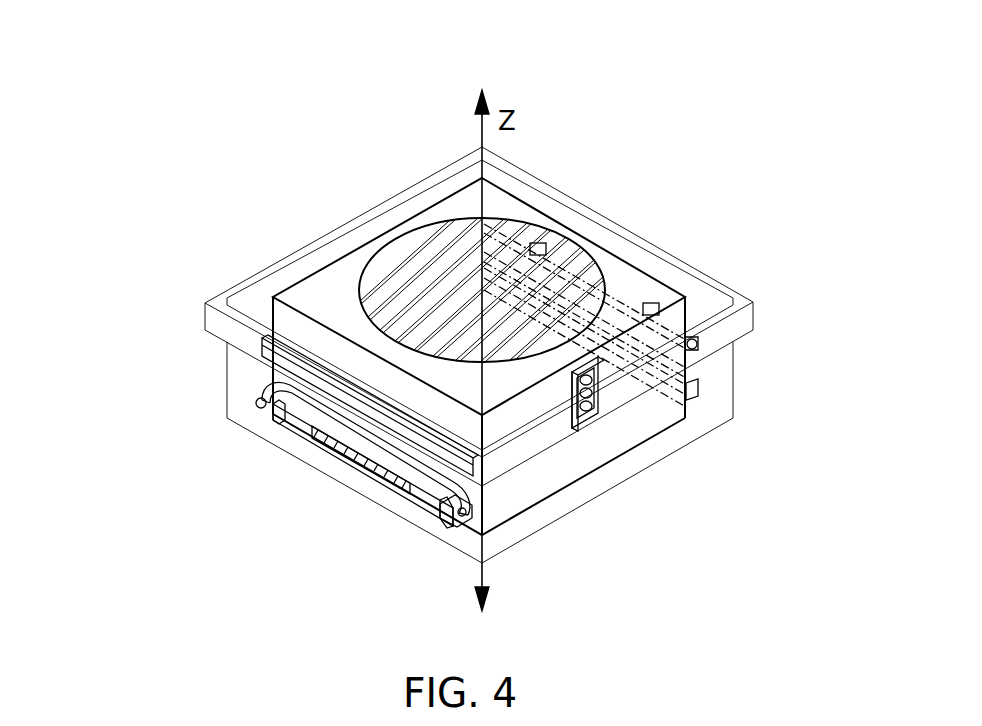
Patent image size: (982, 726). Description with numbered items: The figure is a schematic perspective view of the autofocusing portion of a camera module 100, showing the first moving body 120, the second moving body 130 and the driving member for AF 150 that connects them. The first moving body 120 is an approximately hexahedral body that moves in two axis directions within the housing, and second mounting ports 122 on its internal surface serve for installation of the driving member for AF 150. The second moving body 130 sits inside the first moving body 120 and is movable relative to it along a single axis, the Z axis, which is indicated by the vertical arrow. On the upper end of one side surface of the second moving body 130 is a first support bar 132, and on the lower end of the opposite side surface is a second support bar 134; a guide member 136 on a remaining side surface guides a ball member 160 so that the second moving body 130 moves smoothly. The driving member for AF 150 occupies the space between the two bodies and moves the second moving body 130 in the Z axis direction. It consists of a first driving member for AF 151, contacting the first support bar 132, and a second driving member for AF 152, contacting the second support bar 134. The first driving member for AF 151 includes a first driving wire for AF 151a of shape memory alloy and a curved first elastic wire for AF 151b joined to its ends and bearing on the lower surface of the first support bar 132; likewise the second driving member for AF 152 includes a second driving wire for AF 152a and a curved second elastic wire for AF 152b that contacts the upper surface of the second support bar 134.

The camera module 100 is at (504, 51).
The first moving body 120 is at (207, 315).
The second mounting ports 122 is at (423, 497).
The second moving body 130 is at (316, 285).
The first support bar 132 is at (447, 522).
The second support bar 134 is at (700, 384).
The guide member 136 is at (573, 430).
The driving member for AF 150 is at (718, 20).
The first driving member for AF 151 is at (140, 463).
The first driving wire for AF 151a is at (277, 437).
The first elastic wire for AF 151b is at (263, 380).
The second driving member for AF 152 is at (779, 258).
The second driving wire for AF 152a is at (640, 276).
The second elastic wire for AF 152b is at (563, 218).
The ball member 160 is at (600, 410).